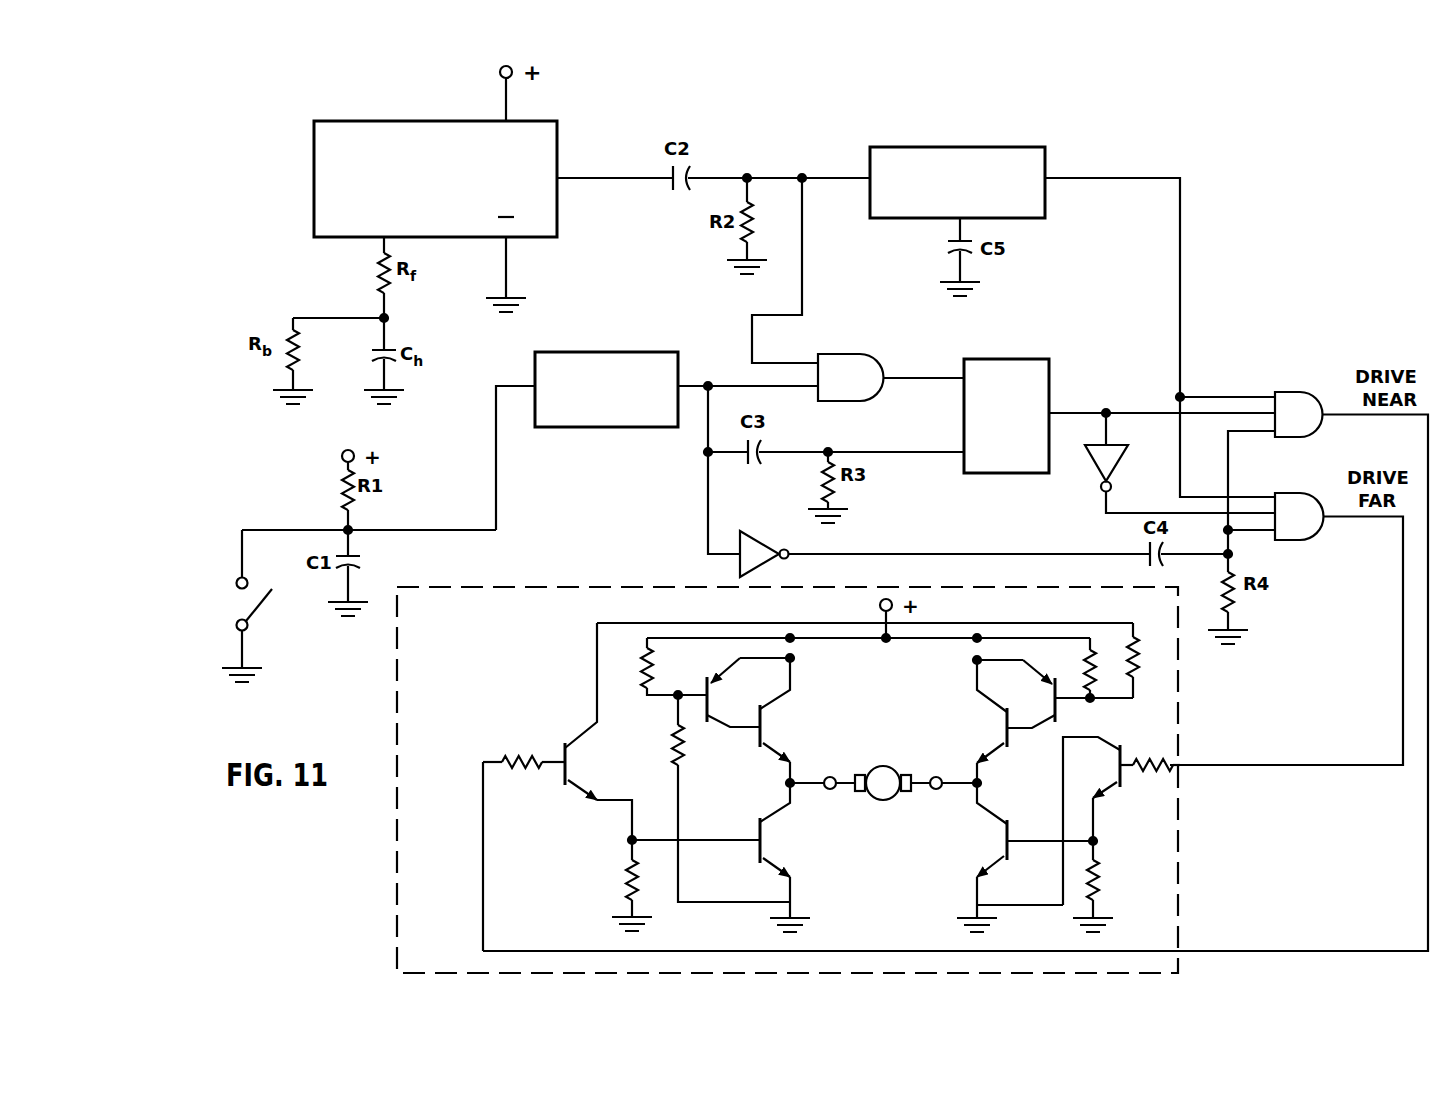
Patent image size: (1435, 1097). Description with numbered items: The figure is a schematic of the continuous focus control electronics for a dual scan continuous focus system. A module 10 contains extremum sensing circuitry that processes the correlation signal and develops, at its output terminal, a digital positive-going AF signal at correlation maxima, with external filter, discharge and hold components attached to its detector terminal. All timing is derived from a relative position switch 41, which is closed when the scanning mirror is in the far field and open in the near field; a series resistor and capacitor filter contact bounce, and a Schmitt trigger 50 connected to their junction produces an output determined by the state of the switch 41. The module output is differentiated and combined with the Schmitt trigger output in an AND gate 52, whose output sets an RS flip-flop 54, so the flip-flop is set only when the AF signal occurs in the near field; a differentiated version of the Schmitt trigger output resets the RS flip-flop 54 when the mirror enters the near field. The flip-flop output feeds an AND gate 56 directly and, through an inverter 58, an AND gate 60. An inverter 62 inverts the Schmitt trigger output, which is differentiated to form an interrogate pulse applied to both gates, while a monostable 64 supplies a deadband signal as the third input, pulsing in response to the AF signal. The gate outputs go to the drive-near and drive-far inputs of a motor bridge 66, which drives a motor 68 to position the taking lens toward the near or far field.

The module 10 is at (405, 121).
The relative position switch 41 is at (260, 607).
The Schmitt trigger 50 is at (568, 352).
The AND gate 52 is at (842, 354).
The RS flip-flop 54 is at (1003, 359).
The AND gate 56 is at (1300, 392).
The inverter 58 is at (1095, 462).
The AND gate 60 is at (1318, 493).
The inverter 62 is at (765, 541).
The monostable 64 is at (938, 147).
The motor bridge 66 is at (1178, 821).
The motor 68 is at (893, 798).